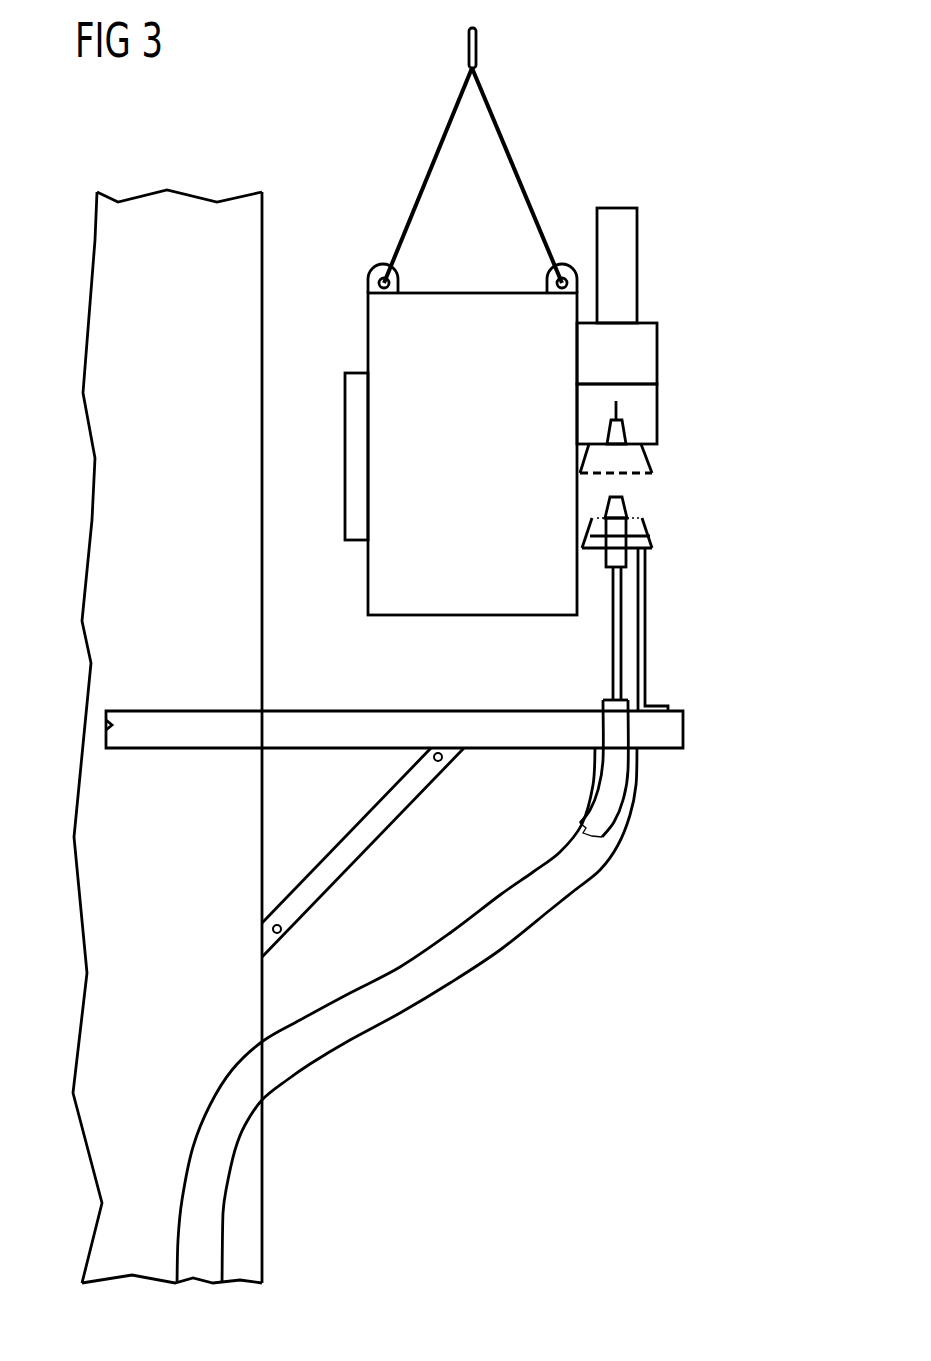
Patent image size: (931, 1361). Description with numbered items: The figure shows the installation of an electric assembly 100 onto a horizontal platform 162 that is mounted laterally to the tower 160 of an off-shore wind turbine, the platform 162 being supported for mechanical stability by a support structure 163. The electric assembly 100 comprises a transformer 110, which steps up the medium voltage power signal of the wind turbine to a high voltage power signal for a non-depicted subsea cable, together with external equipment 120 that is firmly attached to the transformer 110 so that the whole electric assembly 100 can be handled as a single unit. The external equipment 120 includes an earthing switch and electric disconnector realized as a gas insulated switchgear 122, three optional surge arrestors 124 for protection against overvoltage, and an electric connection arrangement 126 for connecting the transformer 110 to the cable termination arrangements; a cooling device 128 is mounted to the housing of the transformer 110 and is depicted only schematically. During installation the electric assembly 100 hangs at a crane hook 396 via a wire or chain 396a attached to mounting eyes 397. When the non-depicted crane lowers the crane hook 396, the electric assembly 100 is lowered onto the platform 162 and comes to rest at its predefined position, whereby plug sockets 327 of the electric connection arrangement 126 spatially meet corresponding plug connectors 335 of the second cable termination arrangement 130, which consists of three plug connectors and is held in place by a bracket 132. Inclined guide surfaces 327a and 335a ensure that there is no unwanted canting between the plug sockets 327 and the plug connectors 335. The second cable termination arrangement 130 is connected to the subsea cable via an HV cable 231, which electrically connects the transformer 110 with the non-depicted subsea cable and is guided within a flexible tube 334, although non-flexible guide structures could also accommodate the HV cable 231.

The electric assembly 100 is at (738, 206).
The transformer 110 is at (478, 590).
The external equipment 120 is at (657, 192).
The gas insulated switchgear 122 is at (652, 357).
The surge arrestors 124 is at (628, 265).
The electric connection arrangement 126 is at (650, 397).
The cooling device 128 is at (357, 382).
The second cable termination arrangement 130 is at (614, 636).
The bracket 132 is at (645, 625).
The tower 160 is at (178, 233).
The platform 162 is at (683, 727).
The support structure 163 is at (357, 848).
The HV cable 231 is at (612, 787).
The plug sockets 327 is at (620, 433).
The inclined guide surfaces 327a is at (645, 465).
The flexible tube 334 is at (505, 940).
The plug connectors 335 is at (625, 508).
The inclined guide surfaces 335a is at (652, 545).
The crane hook 396 is at (477, 50).
The wire or chain 396a is at (513, 152).
The mounting eyes 397 is at (395, 275).